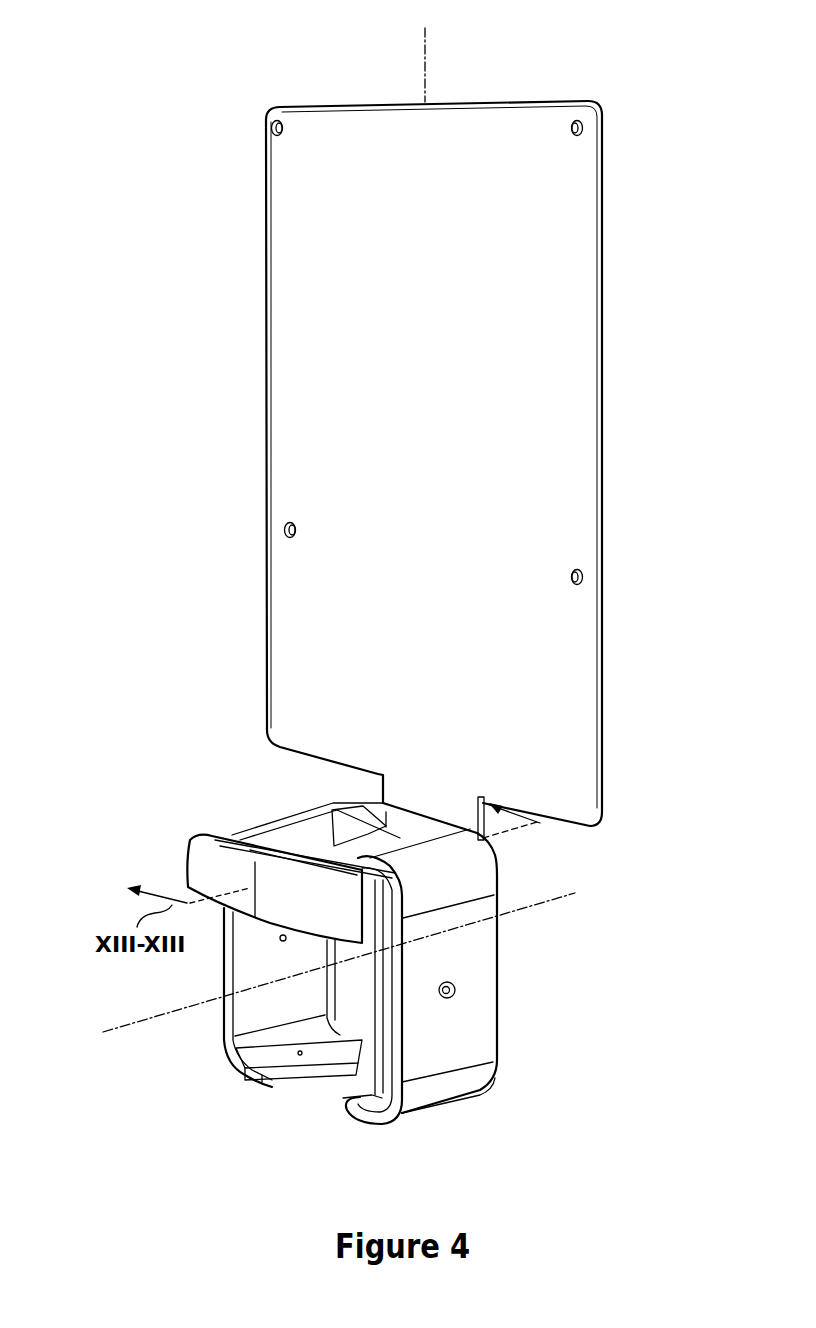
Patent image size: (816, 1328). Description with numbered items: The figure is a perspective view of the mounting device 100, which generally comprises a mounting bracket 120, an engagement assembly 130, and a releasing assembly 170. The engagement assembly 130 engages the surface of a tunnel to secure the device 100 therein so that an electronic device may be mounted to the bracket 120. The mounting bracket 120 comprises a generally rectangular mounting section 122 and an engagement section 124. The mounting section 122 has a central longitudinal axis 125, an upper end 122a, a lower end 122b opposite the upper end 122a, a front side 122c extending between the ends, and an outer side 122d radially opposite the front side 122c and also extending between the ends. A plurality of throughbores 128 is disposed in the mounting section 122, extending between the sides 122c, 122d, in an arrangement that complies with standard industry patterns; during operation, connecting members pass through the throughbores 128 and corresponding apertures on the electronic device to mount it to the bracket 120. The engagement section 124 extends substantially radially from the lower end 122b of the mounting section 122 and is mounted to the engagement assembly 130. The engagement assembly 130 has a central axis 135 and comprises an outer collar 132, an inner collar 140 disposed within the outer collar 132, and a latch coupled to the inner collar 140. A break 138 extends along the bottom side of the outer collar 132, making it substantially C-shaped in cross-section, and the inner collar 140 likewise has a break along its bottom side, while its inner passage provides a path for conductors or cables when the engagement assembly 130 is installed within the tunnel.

The mounting device 100 is at (148, 416).
The mounting bracket 120 is at (447, 454).
The mounting section 122 is at (447, 476).
The upper end 122a is at (563, 102).
The lower end 122b is at (591, 829).
The front side 122c is at (385, 243).
The outer side 122d is at (606, 250).
The engagement section 124 is at (535, 846).
The central longitudinal axis 125 is at (425, 28).
The throughbores 128 is at (286, 134).
The engagement assembly 130 is at (351, 984).
The outer collar 132 is at (440, 1060).
The central axis 135 is at (103, 1033).
The break 138 is at (342, 1112).
The inner collar 140 is at (246, 1064).
The releasing assembly 170 is at (190, 837).